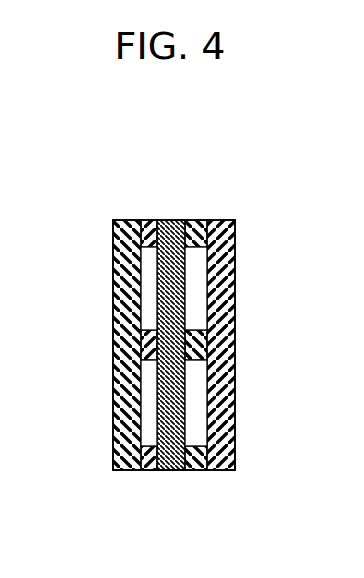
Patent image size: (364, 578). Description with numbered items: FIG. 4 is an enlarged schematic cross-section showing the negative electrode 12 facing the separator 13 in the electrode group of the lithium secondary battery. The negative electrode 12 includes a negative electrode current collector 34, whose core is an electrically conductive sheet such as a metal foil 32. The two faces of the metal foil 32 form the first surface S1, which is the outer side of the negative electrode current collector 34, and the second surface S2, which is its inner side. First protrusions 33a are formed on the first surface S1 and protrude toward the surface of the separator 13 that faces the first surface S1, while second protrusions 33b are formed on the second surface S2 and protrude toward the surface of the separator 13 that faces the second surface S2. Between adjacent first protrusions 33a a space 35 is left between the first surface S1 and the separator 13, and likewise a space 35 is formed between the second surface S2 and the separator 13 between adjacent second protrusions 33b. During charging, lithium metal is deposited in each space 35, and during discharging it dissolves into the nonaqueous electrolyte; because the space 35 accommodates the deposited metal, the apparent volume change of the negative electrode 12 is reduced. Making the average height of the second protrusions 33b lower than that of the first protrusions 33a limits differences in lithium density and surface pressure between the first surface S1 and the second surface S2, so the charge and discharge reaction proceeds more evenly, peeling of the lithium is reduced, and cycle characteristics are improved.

The negative electrode current collector 34 is at (252, 141).
The second protrusions 33b is at (143, 218).
The metal foil 32 is at (170, 218).
The first protrusions 33a is at (202, 218).
The space 35 is at (147, 322).
The first surface S1 is at (193, 287).
The second surface S2 is at (151, 287).
The negative electrode 12 is at (138, 476).
The separator 13 is at (118, 472).